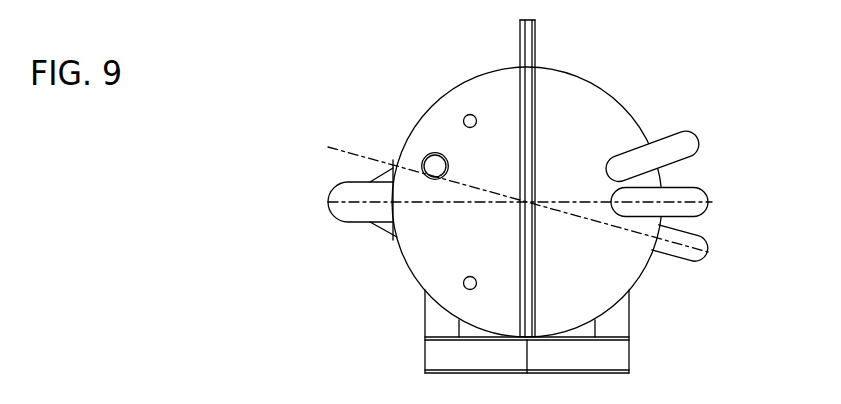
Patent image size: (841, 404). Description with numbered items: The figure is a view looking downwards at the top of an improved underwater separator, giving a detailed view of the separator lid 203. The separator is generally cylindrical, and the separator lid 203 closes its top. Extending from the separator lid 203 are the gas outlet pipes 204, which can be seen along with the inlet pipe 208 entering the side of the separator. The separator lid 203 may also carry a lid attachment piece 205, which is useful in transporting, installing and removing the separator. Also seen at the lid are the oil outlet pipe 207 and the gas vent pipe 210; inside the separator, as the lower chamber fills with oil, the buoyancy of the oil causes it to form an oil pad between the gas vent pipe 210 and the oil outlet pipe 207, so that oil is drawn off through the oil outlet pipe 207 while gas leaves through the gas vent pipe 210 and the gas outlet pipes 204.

The separator lid 203 is at (580, 110).
The gas outlet pipes 204 is at (695, 197).
The lid attachment piece 205 is at (535, 43).
The oil outlet pipe 207 is at (434, 153).
The inlet pipe 208 is at (345, 208).
The gas vent pipe 210 is at (688, 252).